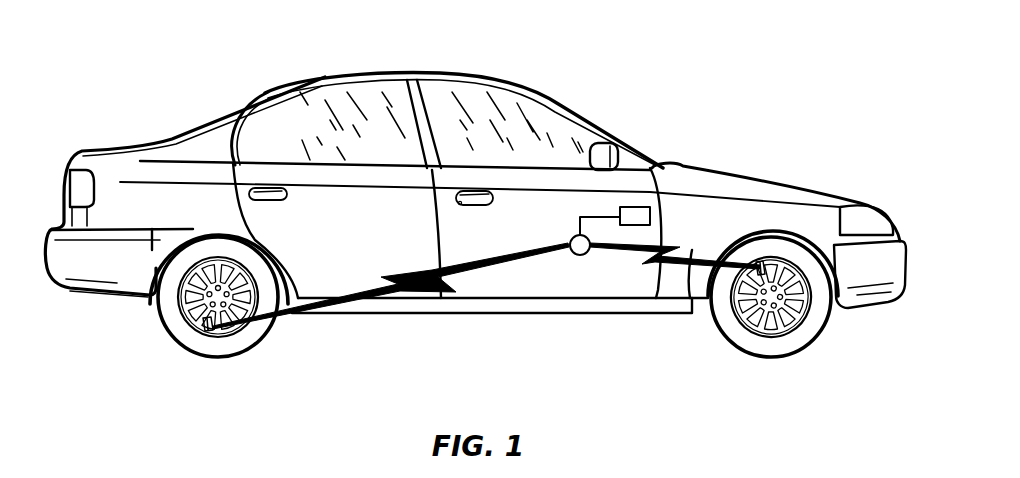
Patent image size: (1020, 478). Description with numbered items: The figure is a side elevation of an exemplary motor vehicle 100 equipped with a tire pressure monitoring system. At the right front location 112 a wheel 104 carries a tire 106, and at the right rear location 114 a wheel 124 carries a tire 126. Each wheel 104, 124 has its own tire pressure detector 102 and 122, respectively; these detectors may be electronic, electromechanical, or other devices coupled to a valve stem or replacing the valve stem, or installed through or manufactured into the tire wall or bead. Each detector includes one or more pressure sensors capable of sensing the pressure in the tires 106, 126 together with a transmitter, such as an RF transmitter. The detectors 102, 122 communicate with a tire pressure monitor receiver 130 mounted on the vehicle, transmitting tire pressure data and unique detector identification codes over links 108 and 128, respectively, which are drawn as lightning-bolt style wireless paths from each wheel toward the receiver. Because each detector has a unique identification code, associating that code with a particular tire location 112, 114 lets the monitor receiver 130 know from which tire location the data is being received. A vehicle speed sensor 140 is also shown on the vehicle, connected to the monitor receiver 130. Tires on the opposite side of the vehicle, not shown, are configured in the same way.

The motor vehicle 100 is at (762, 71).
The tire pressure detector 102 is at (808, 297).
The wheel 104 is at (795, 325).
The tire 106 is at (746, 357).
The link 108 is at (692, 268).
The right front location 112 is at (792, 215).
The right rear location 114 is at (197, 221).
The tire pressure detector 122 is at (222, 333).
The wheel 124 is at (192, 330).
The tire 126 is at (157, 305).
The link 128 is at (428, 293).
The tire pressure monitor receiver 130 is at (580, 258).
The vehicle speed sensor 140 is at (636, 207).